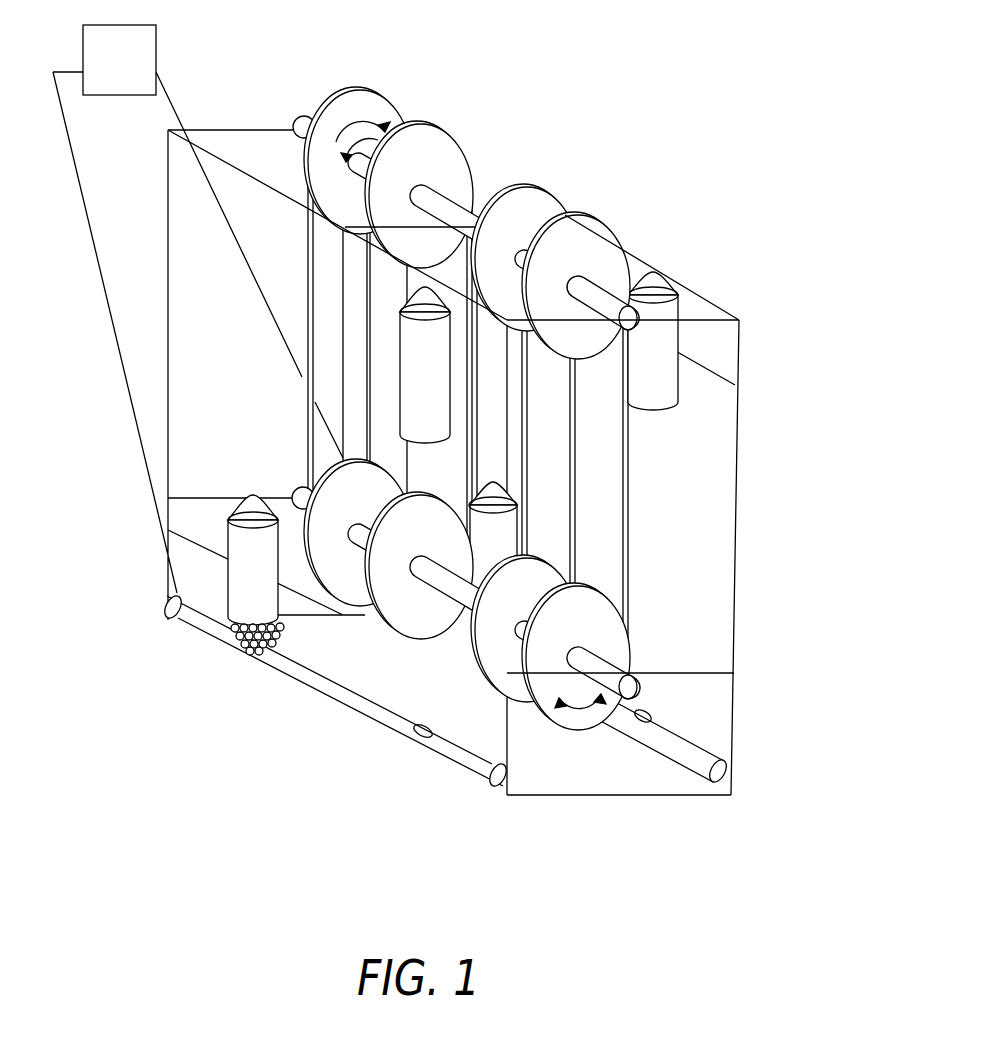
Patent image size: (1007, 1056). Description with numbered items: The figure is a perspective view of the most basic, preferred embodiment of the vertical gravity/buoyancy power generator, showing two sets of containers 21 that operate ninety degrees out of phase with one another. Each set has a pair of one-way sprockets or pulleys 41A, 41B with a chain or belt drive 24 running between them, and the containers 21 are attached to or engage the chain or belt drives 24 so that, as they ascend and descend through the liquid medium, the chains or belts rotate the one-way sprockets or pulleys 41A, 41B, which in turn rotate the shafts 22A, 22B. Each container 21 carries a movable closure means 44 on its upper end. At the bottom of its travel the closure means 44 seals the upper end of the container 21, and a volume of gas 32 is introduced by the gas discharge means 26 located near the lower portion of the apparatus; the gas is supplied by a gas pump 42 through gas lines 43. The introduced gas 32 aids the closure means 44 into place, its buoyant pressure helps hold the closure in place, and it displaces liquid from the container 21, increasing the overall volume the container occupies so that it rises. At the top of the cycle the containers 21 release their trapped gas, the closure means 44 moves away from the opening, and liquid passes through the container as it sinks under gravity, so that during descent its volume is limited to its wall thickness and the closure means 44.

The container 21 is at (243, 582).
The shaft 22A is at (460, 218).
The shaft 22B is at (600, 663).
The chain or belt drive 24 is at (625, 493).
The gas discharge means 26 is at (458, 757).
The volume of gas 32 is at (250, 640).
The one-way sprocket or pulley 41A is at (468, 187).
The one-way sprocket or pulley 41B is at (504, 594).
The gas pump 42 is at (128, 46).
The gas line 43 is at (178, 103).
The closure means 44 is at (250, 513).